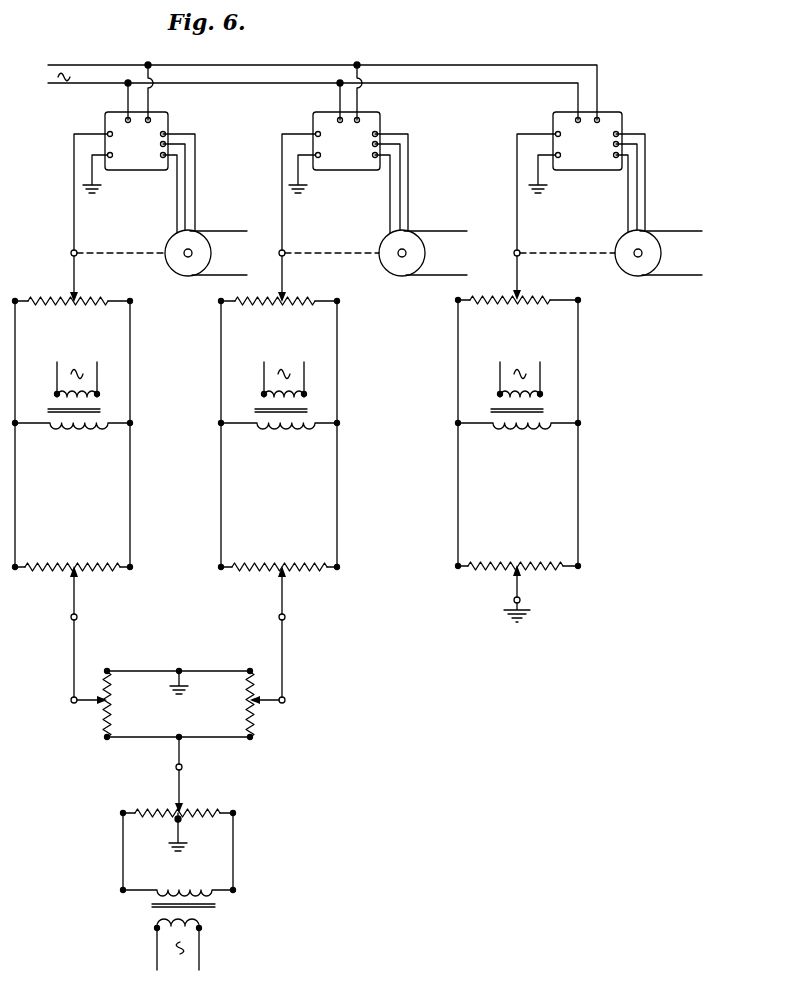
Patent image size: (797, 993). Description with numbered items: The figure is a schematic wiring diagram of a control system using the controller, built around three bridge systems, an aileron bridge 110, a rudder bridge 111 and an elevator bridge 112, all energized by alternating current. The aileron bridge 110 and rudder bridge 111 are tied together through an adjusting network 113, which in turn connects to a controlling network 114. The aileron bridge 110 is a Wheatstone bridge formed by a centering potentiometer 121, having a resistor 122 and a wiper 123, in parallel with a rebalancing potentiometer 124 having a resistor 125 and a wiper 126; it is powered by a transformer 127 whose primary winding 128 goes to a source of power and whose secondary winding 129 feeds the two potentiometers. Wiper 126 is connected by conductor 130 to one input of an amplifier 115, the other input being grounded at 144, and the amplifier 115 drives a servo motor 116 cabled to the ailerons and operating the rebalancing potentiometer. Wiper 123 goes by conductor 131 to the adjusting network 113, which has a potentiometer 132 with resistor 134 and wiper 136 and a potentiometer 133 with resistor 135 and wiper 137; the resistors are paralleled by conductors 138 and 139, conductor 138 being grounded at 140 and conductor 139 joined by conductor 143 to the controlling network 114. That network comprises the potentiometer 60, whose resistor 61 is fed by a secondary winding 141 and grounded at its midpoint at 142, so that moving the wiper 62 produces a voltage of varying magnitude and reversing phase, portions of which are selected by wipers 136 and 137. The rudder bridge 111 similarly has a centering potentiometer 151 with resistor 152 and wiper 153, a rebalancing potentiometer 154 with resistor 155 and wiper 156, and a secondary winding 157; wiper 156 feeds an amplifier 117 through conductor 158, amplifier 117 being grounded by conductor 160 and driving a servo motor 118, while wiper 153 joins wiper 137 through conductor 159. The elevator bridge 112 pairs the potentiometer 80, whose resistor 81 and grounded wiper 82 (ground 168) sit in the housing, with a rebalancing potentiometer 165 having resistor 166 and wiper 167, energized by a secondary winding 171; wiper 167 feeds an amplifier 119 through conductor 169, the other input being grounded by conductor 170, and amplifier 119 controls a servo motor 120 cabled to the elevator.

The amplifier 115 is at (162, 122).
The amplifier 117 is at (372, 122).
The amplifier 119 is at (612, 122).
The ground 144 is at (100, 183).
The conductor 160 is at (310, 183).
The conductor 170 is at (540, 183).
The conductor 130 is at (73, 208).
The conductor 158 is at (284, 221).
The conductor 169 is at (519, 223).
The wiper 126 is at (73, 273).
The wiper 156 is at (284, 278).
The wiper 167 is at (519, 272).
The resistor 125 is at (88, 299).
The resistor 155 is at (263, 296).
The resistor 166 is at (496, 295).
The rebalancing potentiometer 124 is at (76, 313).
The rebalancing potentiometer 154 is at (283, 313).
The rebalancing potentiometer 165 is at (526, 314).
The servo motor 116 is at (184, 265).
The servo motor 118 is at (394, 260).
The servo motor 120 is at (632, 262).
The transformer 127 is at (40, 408).
The primary winding 128 is at (92, 392).
The secondary winding 129 is at (83, 428).
The secondary winding 157 is at (291, 428).
The secondary winding 171 is at (538, 428).
The aileron bridge 110 is at (76, 489).
The rudder bridge 111 is at (282, 496).
The elevator bridge 112 is at (527, 506).
The resistor 122 is at (53, 563).
The resistor 152 is at (268, 562).
The resistor 81 is at (508, 562).
The centering potentiometer 121 is at (79, 551).
The centering potentiometer 151 is at (287, 552).
The potentiometer 80 is at (530, 553).
The wiper 123 is at (72, 590).
The wiper 153 is at (280, 590).
The wiper 82 is at (513, 590).
The conductor 131 is at (72, 637).
The conductor 159 is at (285, 637).
The potentiometer 132 is at (95, 682).
The potentiometer 133 is at (261, 682).
The resistor 134 is at (105, 716).
The resistor 135 is at (257, 727).
The wiper 136 is at (79, 704).
The wiper 137 is at (277, 706).
The conductor 138 is at (202, 664).
The conductor 139 is at (205, 740).
The ground 140 is at (190, 680).
The adjusting network 113 is at (178, 722).
The conductor 143 is at (176, 758).
The wiper 62 is at (175, 787).
The potentiometer 60 is at (200, 806).
The resistor 61 is at (164, 822).
The ground 142 is at (183, 839).
The secondary winding 141 is at (196, 887).
The controlling network 114 is at (170, 877).
The ground 168 is at (522, 612).